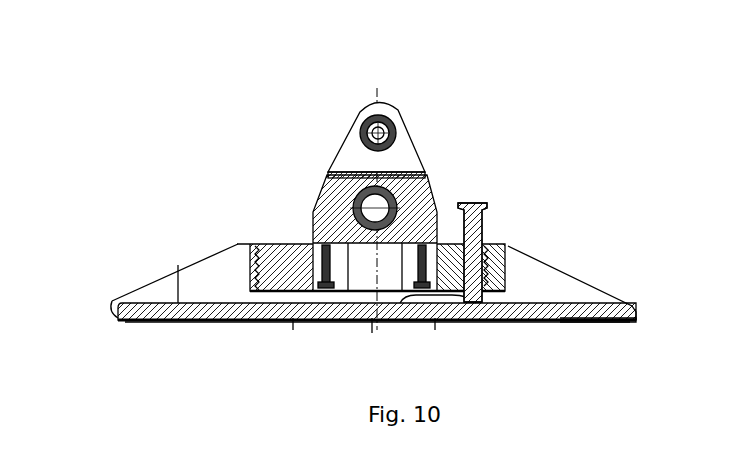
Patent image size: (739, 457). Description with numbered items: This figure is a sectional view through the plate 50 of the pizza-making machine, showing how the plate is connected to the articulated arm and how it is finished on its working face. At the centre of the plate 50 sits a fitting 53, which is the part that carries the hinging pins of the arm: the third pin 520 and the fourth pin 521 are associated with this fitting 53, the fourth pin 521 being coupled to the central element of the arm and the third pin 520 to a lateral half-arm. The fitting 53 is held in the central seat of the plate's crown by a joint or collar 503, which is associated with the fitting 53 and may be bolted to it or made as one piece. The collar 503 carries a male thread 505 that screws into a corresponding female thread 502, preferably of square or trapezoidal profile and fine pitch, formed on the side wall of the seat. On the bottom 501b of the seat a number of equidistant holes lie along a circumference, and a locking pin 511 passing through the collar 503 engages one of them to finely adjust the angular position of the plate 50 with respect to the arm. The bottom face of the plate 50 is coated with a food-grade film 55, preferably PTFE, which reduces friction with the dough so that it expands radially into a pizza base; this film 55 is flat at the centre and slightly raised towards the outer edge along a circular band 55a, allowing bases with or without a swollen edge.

The plate 50 is at (373, 222).
The hinging pin 521 is at (368, 133).
The fitting 53 is at (415, 172).
The hinging pin 520 is at (358, 208).
The collar 503 is at (283, 243).
The male thread 505 is at (240, 245).
The locking pin 511 is at (482, 217).
The female thread 502 is at (508, 247).
The film 55 is at (296, 322).
The bottom of the seat 501b is at (435, 322).
The circular band 55a is at (610, 325).